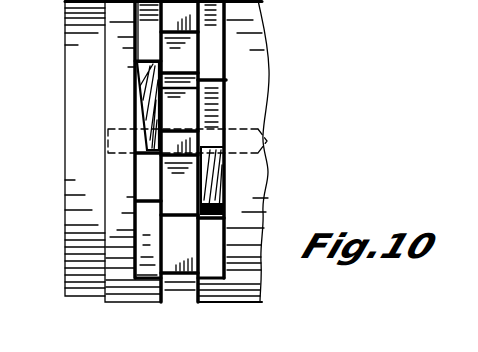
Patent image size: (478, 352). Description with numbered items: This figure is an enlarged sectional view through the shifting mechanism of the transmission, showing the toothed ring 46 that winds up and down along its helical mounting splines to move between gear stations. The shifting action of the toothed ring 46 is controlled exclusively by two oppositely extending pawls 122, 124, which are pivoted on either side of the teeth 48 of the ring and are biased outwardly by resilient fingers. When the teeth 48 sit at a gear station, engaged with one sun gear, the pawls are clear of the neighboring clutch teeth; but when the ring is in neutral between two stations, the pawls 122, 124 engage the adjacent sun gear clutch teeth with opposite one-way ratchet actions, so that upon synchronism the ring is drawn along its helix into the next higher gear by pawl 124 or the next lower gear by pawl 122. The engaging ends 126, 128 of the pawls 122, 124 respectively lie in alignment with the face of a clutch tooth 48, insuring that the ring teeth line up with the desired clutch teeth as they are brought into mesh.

The toothed ring 46 is at (262, 178).
The teeth 48 is at (200, 79).
The pawl 122 is at (220, 107).
The pawl 124 is at (133, 107).
The engaging end 126 is at (258, 222).
The engaging end 128 is at (133, 59).